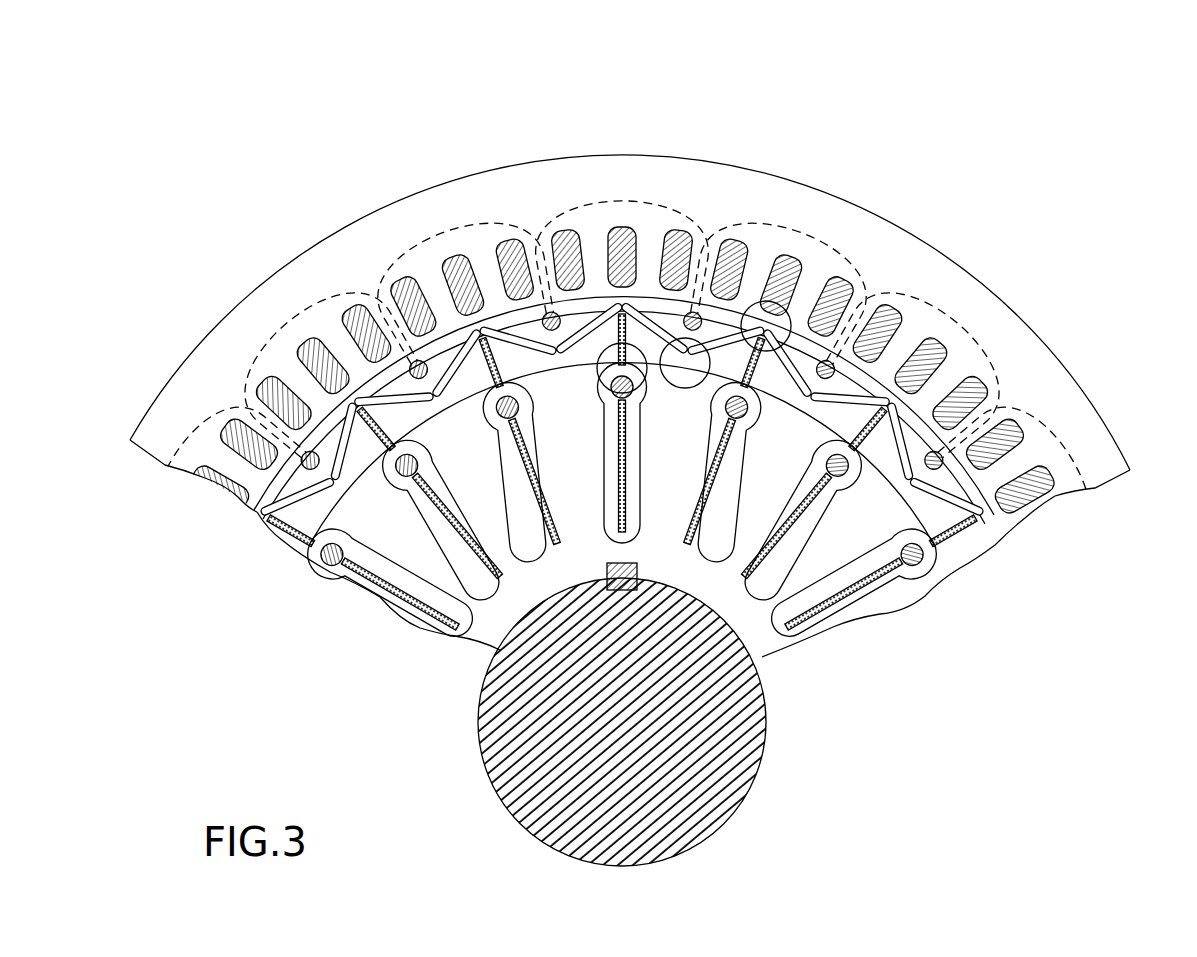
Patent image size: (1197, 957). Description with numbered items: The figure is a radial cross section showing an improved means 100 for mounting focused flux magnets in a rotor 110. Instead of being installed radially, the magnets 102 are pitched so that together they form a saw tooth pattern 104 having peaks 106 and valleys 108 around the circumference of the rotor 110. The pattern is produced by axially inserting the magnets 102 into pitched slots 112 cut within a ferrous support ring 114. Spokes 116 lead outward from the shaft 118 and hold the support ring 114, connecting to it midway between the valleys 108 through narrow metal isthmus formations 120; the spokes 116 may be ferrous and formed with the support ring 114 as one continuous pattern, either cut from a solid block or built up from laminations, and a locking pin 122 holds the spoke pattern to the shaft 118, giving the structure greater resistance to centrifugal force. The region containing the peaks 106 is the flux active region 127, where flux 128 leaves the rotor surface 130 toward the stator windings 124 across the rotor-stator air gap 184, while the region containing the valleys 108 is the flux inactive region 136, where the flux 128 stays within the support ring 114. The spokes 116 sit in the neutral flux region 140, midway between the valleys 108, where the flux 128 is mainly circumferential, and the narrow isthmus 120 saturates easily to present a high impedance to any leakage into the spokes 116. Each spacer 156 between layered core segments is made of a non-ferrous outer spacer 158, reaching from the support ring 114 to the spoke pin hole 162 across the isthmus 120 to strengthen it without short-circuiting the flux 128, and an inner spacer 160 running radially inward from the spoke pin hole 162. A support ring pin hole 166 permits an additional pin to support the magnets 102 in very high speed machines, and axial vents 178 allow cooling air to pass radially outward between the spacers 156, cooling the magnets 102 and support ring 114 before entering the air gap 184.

The improved means to mount focused flux magnets 100 is at (909, 146).
The magnets 102 is at (1005, 510).
The saw tooth pattern 104 is at (902, 511).
The peaks 106 is at (880, 393).
The valleys 108 is at (752, 398).
The rotor 110 is at (303, 594).
The pitched slots 112 is at (716, 576).
The ferrous support ring 114 is at (290, 555).
The spokes 116 is at (872, 602).
The shaft 118 is at (704, 764).
The isthmus formations 120 is at (860, 452).
The locking pin 122 is at (640, 577).
The windings 124 is at (985, 392).
The flux active region 127 is at (775, 304).
The flux 128 is at (650, 193).
The rotor surface 130 is at (1010, 532).
The flux inactive region 136 is at (687, 383).
The neutral flux region 140 is at (612, 382).
The spacer 156 is at (493, 422).
The non-ferrous outer spacer 158 is at (386, 464).
The inner spacer 160 is at (425, 514).
The spoke pin hole 162 is at (801, 462).
The support ring pin hole 166 is at (940, 443).
The axial vents 178 is at (801, 592).
The rotor-stator air gap 184 is at (258, 513).